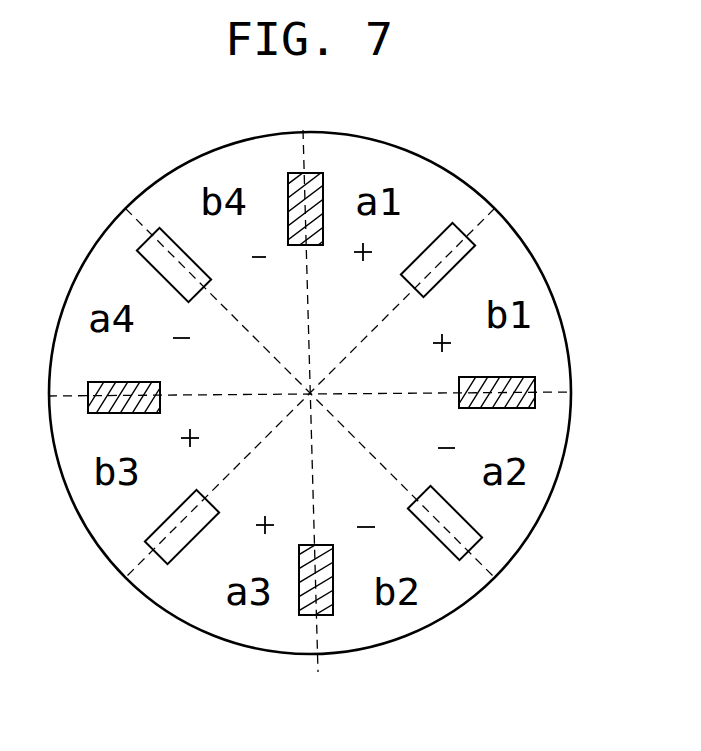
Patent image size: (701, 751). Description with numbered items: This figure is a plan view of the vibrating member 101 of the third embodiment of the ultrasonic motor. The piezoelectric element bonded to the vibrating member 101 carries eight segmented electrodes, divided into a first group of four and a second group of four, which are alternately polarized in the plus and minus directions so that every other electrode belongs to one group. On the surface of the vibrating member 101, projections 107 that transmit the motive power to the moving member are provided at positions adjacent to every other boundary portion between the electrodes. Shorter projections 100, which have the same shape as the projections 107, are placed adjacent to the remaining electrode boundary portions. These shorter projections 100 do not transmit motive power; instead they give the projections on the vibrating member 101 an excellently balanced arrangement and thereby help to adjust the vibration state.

The shorter projection 100 is at (310, 176).
The projection 107 is at (455, 240).
The vibrating member 101 is at (527, 548).